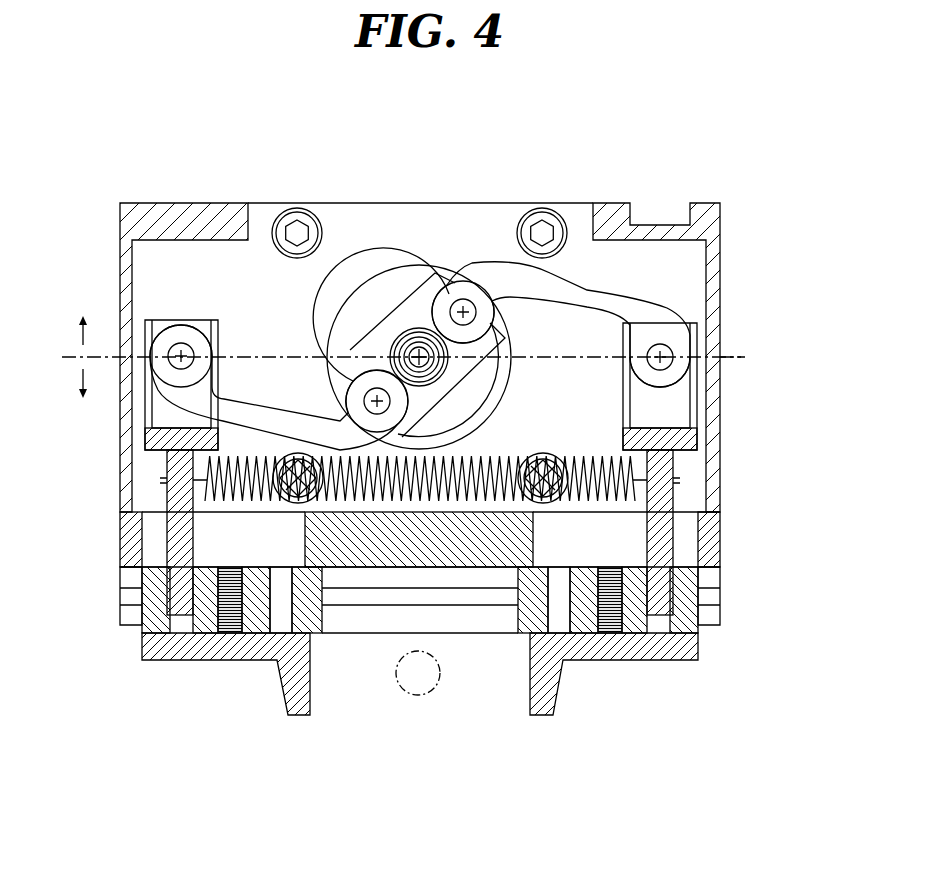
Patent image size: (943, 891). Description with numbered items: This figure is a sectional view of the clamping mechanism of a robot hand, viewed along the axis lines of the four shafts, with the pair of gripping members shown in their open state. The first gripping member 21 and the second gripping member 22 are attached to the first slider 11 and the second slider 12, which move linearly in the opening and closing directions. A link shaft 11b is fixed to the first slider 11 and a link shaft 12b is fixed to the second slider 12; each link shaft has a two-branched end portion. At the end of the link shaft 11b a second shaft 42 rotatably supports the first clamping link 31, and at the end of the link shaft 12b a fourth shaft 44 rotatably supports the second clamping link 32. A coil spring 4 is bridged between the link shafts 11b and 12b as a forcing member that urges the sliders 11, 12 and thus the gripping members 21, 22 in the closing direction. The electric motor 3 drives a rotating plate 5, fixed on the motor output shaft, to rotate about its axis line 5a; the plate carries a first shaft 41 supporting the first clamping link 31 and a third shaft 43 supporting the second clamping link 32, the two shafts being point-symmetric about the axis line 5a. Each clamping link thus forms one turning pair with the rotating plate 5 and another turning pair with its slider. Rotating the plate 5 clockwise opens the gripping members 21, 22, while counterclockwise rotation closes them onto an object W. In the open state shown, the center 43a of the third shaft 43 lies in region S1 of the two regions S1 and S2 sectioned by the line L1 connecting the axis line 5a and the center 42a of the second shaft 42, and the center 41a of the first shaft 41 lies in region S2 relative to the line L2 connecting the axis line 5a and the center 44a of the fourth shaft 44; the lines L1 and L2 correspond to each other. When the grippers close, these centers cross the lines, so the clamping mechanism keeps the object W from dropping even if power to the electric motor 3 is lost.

The electric motor 3 is at (360, 297).
The coil spring 4 is at (500, 497).
The rotating plate 5 is at (417, 337).
The axis line of the rotating plate 5a is at (400, 329).
The first slider 11 is at (208, 625).
The link shaft 11b is at (163, 413).
The second slider 12 is at (582, 623).
The link shaft 12b is at (673, 403).
The first gripping member 21 is at (221, 647).
The second gripping member 22 is at (627, 647).
The first clamping link 31 is at (258, 418).
The second clamping link 32 is at (598, 290).
The first shaft 41 is at (367, 390).
The center of the first shaft 41a is at (400, 408).
The second shaft 42 is at (184, 345).
The center of the second shaft 42a is at (190, 350).
The third shaft 43 is at (466, 300).
The center of the third shaft 43a is at (492, 304).
The fourth shaft 44 is at (667, 343).
The center of the fourth shaft 44a is at (672, 351).
The line L1 is at (72, 358).
The line L2 is at (735, 358).
The region S1 is at (85, 315).
The region S2 is at (85, 399).
The object W is at (418, 696).